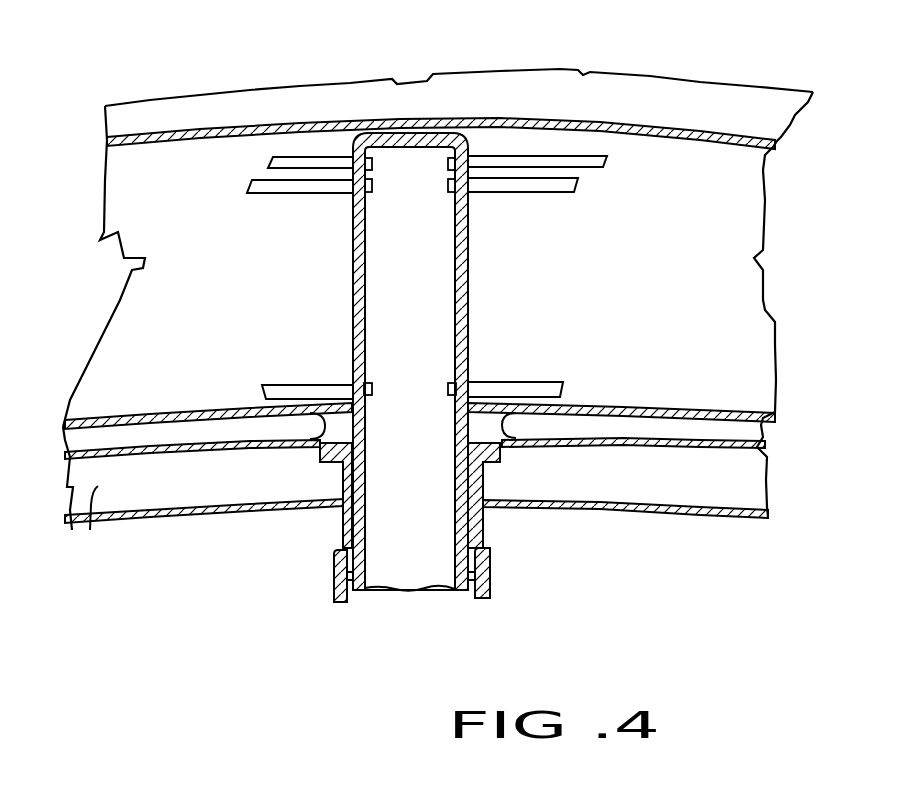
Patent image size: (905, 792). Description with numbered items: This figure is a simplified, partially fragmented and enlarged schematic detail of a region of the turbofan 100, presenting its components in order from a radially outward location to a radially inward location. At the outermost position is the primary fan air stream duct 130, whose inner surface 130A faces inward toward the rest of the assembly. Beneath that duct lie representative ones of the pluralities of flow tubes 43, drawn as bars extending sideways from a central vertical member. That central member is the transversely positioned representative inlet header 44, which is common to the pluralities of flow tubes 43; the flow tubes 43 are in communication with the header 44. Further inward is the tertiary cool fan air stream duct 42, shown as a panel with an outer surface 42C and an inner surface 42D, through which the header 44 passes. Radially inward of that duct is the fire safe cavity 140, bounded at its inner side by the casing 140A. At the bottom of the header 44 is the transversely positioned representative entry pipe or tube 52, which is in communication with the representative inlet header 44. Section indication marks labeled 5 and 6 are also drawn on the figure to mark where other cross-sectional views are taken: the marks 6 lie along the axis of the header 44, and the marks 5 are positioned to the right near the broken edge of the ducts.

The turbofan 100 is at (632, 65).
The primary fan air stream duct 130 is at (430, 86).
The inner surface of primary fan air stream duct 130A is at (578, 121).
The tertiary cool fan air stream duct 42 is at (113, 430).
The outer surface of tertiary cool fan air stream duct 42C is at (150, 413).
The inner surface of tertiary cool fan air stream duct 42D is at (140, 452).
The flow tubes 43 is at (311, 188).
The inlet header 44 is at (432, 220).
The entry pipe 52 is at (464, 535).
The fire safe cavity 140 is at (73, 532).
The casing 140A is at (152, 522).
The section line 5- 5 is at (702, 317).
The section line 6- 6 is at (408, 292).